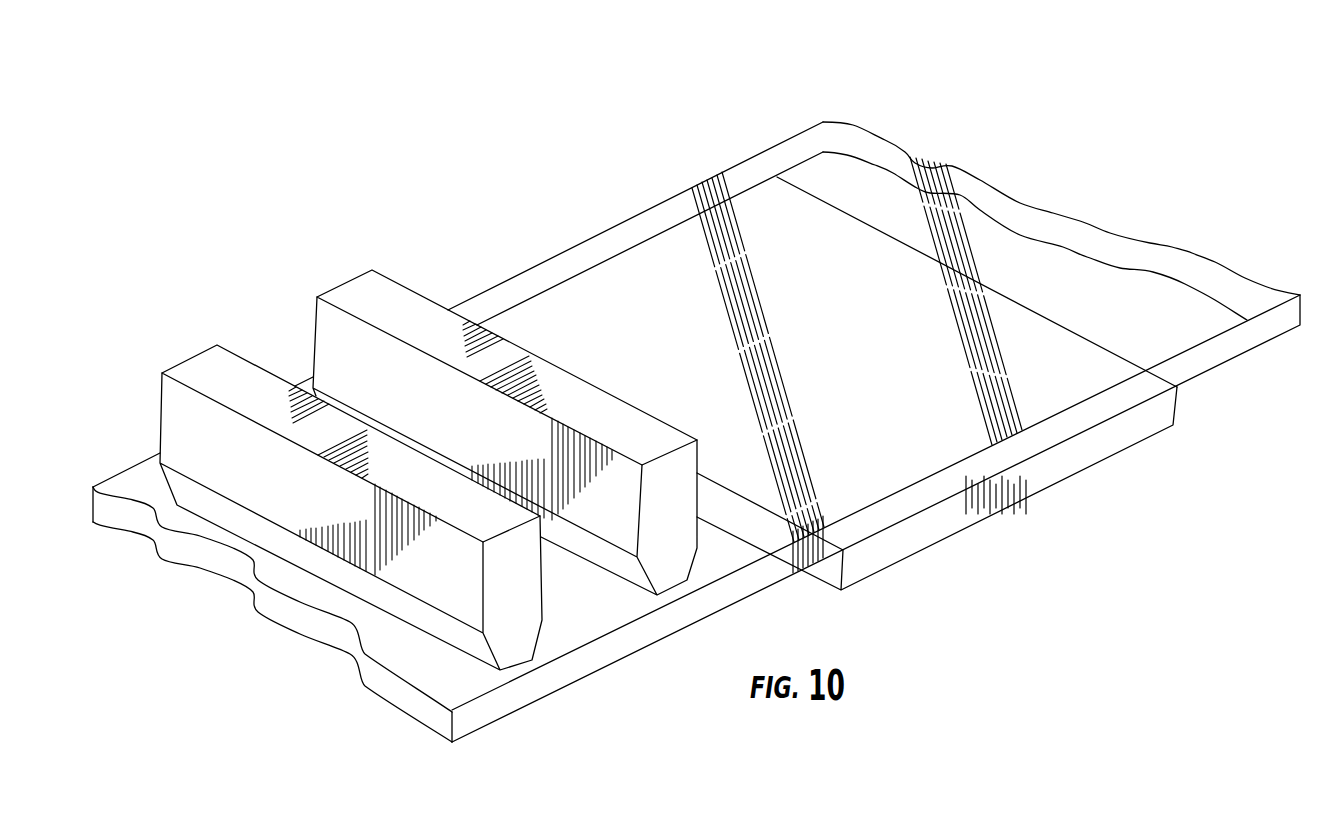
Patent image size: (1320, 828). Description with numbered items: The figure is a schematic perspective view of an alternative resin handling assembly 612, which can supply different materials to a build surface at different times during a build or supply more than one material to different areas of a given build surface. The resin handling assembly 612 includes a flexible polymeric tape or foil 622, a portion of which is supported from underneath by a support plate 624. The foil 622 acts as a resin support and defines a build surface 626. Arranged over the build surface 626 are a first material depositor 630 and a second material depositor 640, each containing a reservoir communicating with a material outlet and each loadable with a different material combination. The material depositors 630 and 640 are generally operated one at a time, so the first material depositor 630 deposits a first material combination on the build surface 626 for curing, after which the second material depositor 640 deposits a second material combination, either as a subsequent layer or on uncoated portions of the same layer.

The resin handling assembly 612 is at (730, 70).
The flexible polymeric tape or foil 622 is at (1230, 346).
The support plate 624 is at (1110, 447).
The build surface 626 is at (1045, 272).
The first material depositor 630 is at (199, 371).
The second material depositor 640 is at (360, 296).